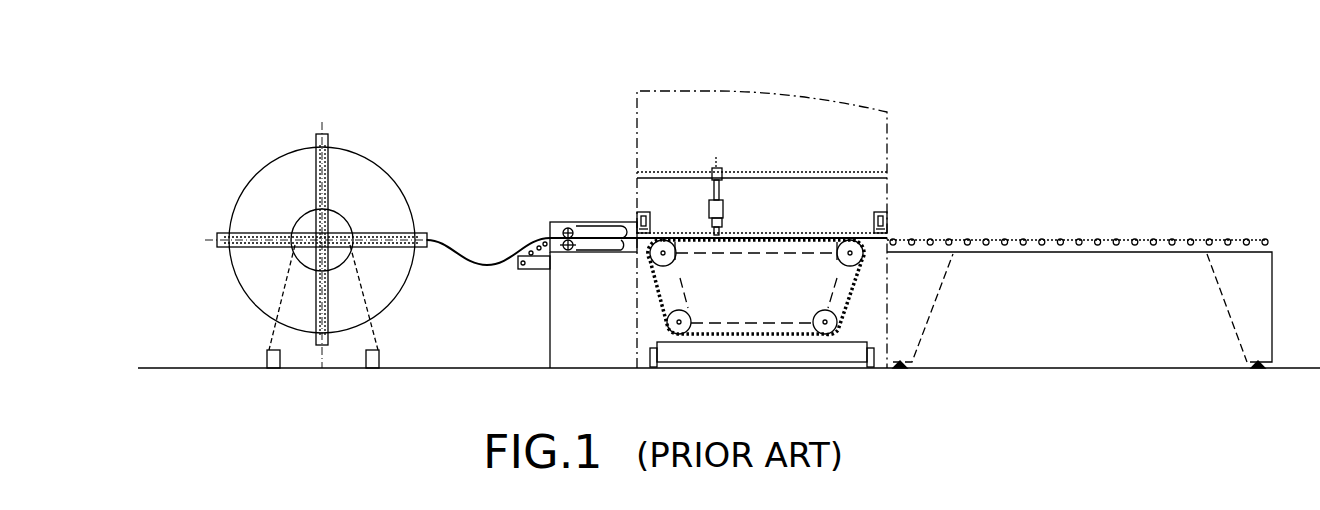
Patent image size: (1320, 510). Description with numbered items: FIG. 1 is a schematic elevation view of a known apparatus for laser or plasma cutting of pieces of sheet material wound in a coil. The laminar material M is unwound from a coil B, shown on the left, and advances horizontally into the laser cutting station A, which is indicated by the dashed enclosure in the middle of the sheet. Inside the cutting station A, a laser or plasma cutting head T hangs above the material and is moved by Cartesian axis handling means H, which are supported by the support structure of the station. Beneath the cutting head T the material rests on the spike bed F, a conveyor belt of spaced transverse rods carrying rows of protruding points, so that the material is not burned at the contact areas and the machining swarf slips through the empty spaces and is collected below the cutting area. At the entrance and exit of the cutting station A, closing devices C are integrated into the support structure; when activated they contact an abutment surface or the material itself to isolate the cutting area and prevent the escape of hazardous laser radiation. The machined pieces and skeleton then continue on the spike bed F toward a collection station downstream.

The coil B is at (230, 181).
The laminar material M is at (490, 257).
The laser cutting station A is at (814, 90).
The Cartesian axis handling means H is at (857, 177).
The laser or plasma cutting head T is at (692, 208).
The closing devices C is at (635, 222).
The spike bed F is at (862, 301).